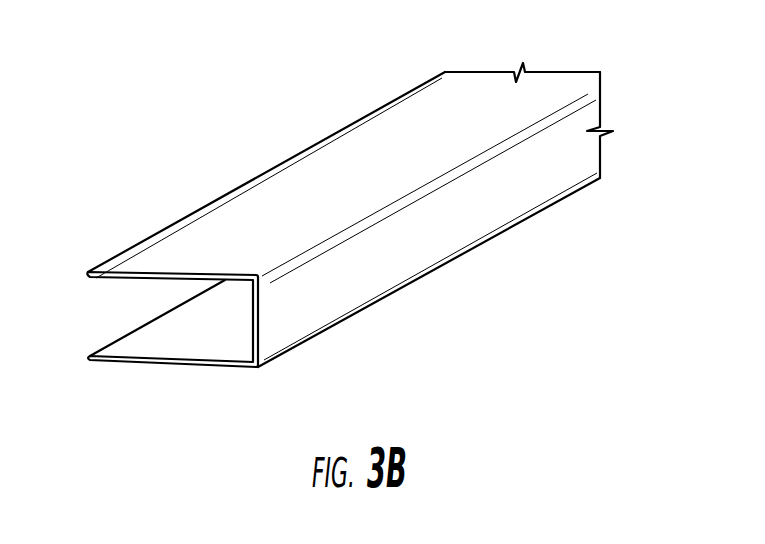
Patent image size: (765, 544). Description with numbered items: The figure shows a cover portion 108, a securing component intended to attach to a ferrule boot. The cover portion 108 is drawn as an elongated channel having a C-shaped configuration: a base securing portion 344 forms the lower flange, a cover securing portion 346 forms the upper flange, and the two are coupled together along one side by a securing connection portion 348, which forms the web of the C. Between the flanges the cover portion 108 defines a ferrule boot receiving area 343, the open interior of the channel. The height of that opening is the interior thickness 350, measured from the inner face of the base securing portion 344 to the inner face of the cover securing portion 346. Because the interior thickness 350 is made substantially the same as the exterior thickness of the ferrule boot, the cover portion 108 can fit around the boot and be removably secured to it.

The cover portion 108 is at (450, 300).
The ferrule boot receiving area 343 is at (140, 340).
The base securing portion 344 is at (227, 365).
The cover securing portion 346 is at (150, 236).
The securing connection portion 348 is at (543, 207).
The interior thickness 350 is at (82, 277).